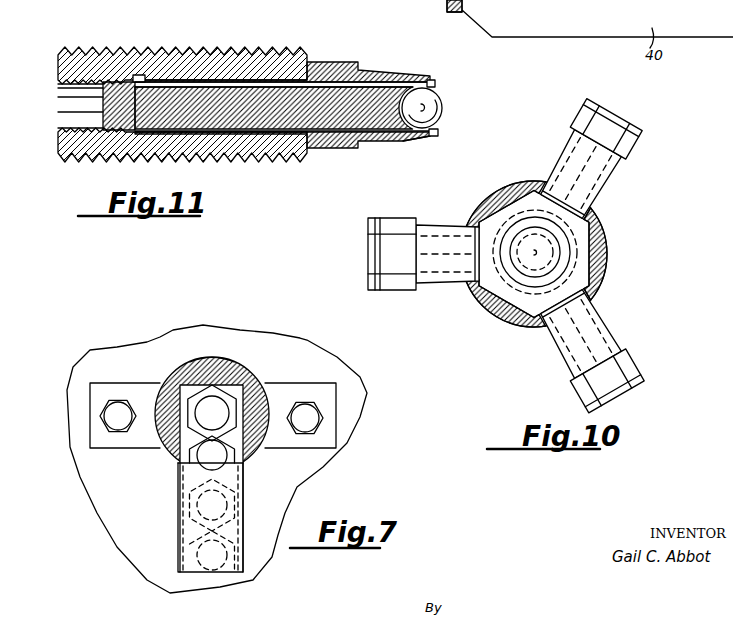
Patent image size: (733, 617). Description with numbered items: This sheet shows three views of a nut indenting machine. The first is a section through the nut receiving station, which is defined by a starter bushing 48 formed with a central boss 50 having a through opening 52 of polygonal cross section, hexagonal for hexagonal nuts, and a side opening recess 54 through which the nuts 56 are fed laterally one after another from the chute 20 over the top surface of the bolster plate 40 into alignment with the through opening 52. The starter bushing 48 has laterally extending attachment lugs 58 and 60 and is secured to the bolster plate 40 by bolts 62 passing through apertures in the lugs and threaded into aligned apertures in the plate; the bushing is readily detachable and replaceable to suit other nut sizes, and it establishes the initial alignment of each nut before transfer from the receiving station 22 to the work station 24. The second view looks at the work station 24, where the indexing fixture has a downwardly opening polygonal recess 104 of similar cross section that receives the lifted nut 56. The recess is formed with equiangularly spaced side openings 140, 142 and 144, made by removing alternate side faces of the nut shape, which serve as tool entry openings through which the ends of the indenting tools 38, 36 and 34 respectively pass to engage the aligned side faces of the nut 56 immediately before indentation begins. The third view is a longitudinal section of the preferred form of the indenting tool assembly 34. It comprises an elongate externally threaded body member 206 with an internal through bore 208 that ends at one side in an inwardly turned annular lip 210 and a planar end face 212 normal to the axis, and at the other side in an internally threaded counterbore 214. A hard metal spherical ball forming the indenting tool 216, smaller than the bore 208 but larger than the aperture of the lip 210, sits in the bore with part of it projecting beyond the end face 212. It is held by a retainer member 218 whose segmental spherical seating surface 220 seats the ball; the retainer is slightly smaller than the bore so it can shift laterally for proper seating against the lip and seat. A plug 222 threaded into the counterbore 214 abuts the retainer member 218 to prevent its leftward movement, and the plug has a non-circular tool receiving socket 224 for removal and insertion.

In FIG. 7, the chute 20 is at (178, 530).
In FIG. 7, the receiving station 22 is at (270, 375).
In FIG. 10, the work station 24 is at (614, 232).
In FIG. 11, the indenting tool assembly 34 is at (258, 44).
In FIG. 10, the indenting tool assembly 34 is at (440, 219).
In FIG. 10, the indenting tool 36 is at (618, 326).
In FIG. 10, the indenting tool 38 is at (628, 156).
In FIG. 7, the bolster plate 40 is at (156, 348).
In FIG. 7, the starter bushing 48 is at (170, 378).
In FIG. 7, the central boss 50 is at (215, 362).
In FIG. 7, the through opening 52 is at (212, 405).
In FIG. 7, the side opening recess 54 is at (176, 462).
In FIG. 10, the nut 56 is at (488, 306).
In FIG. 7, the nut 56 is at (242, 540).
In FIG. 7, the attachment lug 58 is at (112, 394).
In FIG. 7, the attachment lug 60 is at (312, 383).
In FIG. 7, the bolt 62 is at (113, 434).
In FIG. 10, the polygonal recess 104 is at (504, 318).
In FIG. 10, the side opening 140 is at (596, 215).
In FIG. 10, the side opening 142 is at (598, 290).
In FIG. 10, the side opening 144 is at (470, 293).
In FIG. 11, the body member 206 is at (316, 57).
In FIG. 11, the through bore 208 is at (282, 150).
In FIG. 11, the annular lip 210 is at (425, 139).
In FIG. 11, the planar end face 212 is at (440, 132).
In FIG. 11, the counterbore 214 is at (110, 160).
In FIG. 11, the indenting tool 216 is at (442, 106).
In FIG. 11, the retainer member 218 is at (334, 148).
In FIG. 11, the seating surface 220 is at (403, 134).
In FIG. 11, the plug 222 is at (127, 76).
In FIG. 11, the tool receiving socket 224 is at (103, 103).